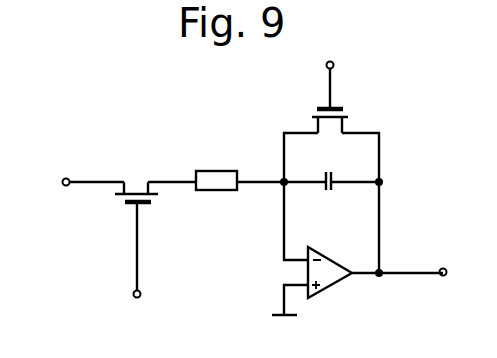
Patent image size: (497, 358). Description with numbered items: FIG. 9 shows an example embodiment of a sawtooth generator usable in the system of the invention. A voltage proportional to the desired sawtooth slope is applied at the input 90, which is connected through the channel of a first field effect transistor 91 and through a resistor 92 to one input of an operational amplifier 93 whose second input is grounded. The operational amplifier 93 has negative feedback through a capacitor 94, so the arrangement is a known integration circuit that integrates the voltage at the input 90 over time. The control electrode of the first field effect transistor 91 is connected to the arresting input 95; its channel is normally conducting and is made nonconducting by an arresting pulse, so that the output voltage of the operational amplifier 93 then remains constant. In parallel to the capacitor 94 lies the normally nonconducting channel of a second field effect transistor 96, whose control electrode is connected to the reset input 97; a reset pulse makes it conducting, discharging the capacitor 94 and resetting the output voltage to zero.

The input 90 is at (63, 179).
The first field effect transistor 91 is at (140, 192).
The resistor 92 is at (214, 170).
The operational amplifier 93 is at (336, 275).
The capacitor 94 is at (330, 172).
The arresting input 95 is at (140, 297).
The second field effect transistor 96 is at (344, 112).
The reset input 97 is at (334, 62).